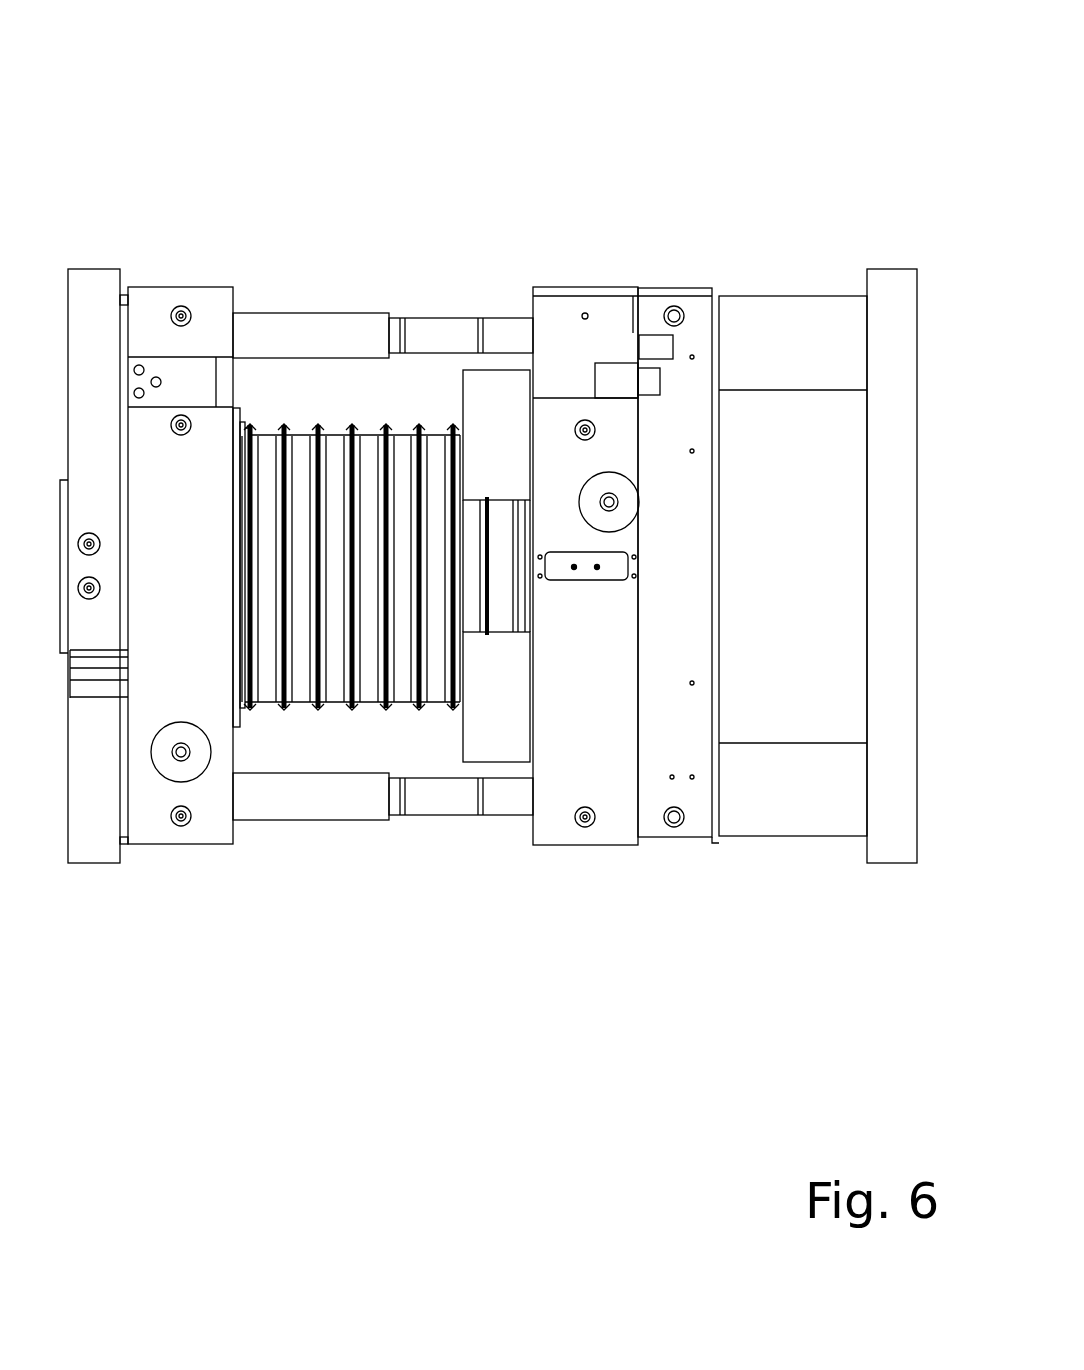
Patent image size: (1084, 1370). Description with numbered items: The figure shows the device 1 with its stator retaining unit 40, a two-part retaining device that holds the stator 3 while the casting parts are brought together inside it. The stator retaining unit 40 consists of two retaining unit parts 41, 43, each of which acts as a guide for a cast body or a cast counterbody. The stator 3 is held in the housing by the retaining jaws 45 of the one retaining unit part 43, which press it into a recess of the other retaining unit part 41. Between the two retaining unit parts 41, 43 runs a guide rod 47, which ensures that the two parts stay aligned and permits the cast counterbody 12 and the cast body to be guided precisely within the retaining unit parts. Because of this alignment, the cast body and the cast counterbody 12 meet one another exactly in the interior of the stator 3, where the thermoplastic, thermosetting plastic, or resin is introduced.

The device 1 is at (560, 58).
The stator 3 is at (285, 740).
The cast counterbody 12 is at (800, 745).
The stator retaining unit 40 is at (665, 218).
The retaining unit part 41 is at (157, 300).
The retaining unit part 43 is at (595, 305).
The retaining jaws 45 is at (505, 388).
The guide rod 47 is at (334, 323).